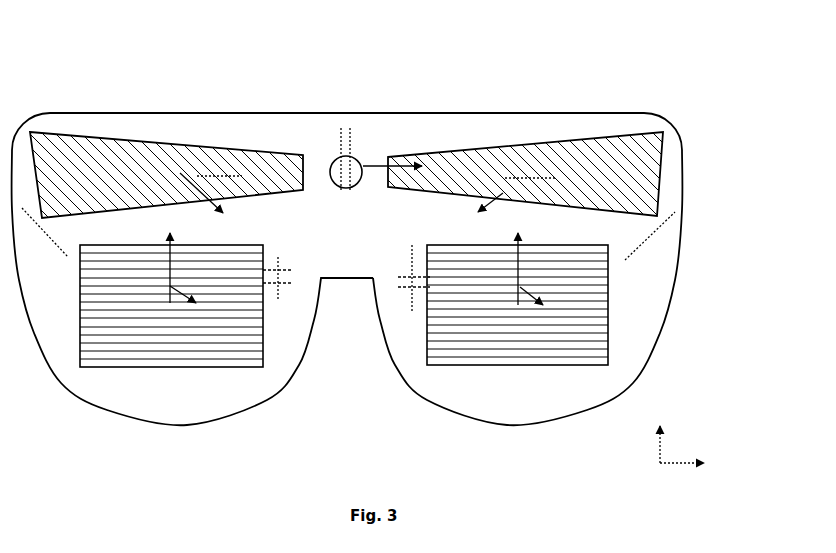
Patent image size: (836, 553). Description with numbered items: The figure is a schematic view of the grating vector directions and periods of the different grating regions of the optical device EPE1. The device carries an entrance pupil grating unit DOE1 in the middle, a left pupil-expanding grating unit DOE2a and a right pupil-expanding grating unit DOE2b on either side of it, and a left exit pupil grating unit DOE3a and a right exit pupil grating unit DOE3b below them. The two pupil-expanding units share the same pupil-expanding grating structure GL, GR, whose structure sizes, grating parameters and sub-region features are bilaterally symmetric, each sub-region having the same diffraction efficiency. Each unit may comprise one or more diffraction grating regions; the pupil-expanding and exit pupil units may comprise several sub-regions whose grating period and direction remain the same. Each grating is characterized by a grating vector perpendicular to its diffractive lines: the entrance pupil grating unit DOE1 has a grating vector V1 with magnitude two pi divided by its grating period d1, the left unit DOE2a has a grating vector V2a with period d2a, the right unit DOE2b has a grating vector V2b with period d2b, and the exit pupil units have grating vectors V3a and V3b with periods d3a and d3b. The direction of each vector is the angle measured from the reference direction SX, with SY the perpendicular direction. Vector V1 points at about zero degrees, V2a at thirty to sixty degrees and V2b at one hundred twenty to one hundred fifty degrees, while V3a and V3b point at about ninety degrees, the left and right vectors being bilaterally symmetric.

The pupil-expanding grating structure GL is at (175, 153).
The pupil-expanding grating structure GR is at (628, 153).
The optical device EPE1 is at (352, 92).
The entrance pupil grating unit DOE1 is at (352, 187).
The grating period of the entrance pupil grating unit d1 is at (380, 137).
The grating vector of the entrance pupil grating unit V1 is at (379, 166).
The left pupil-expanding grating unit DOE2a is at (104, 136).
The right pupil-expanding grating unit DOE2b is at (542, 132).
The left exit pupil grating unit DOE3a is at (126, 367).
The right exit pupil grating unit DOE3b is at (563, 365).
The grating vector of the left pupil-expanding grating unit V2a is at (212, 200).
The grating vector of the right pupil-expanding grating unit V2b is at (508, 203).
The grating vector of the left exit pupil grating unit V3a is at (178, 260).
The grating vector of the right exit pupil grating unit V3b is at (525, 261).
The grating period of the left pupil-expanding grating unit d2a is at (22, 208).
The grating period of the right pupil-expanding grating unit d2b is at (675, 212).
The grating period of the left exit pupil grating unit d3a is at (278, 300).
The grating period of the right exit pupil grating unit d3b is at (412, 302).
The reference direction SX is at (692, 464).
The vertical direction SY is at (657, 435).